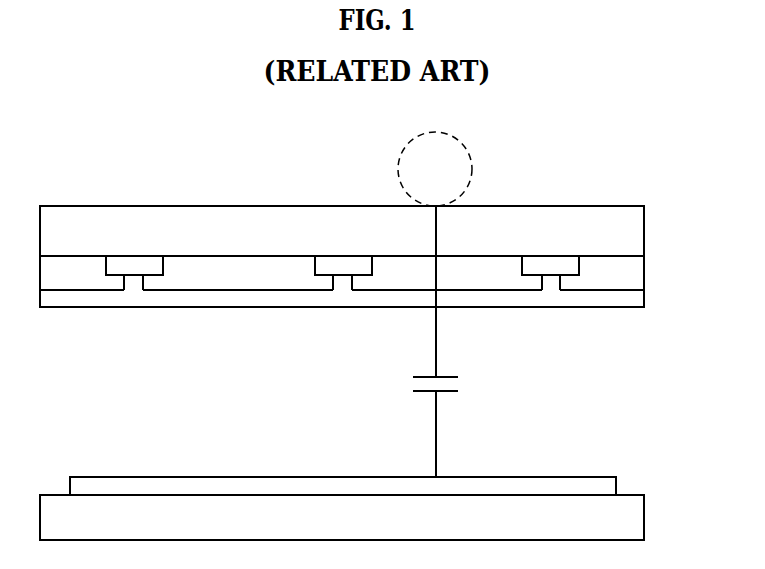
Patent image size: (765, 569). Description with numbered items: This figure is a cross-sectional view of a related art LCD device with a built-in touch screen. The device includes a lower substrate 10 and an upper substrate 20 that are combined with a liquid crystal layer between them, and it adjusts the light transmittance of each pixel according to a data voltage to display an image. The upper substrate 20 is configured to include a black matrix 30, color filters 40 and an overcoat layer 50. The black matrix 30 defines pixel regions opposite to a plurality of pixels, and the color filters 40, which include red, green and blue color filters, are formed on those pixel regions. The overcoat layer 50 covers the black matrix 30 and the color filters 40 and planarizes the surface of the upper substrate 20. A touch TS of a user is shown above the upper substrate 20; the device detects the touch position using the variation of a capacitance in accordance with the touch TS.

The lower substrate 10 is at (644, 516).
The upper substrate 20 is at (644, 230).
The black matrix 30 is at (552, 262).
The color filters 40 is at (644, 274).
The overcoat layer 50 is at (644, 298).
The touch TS is at (435, 157).